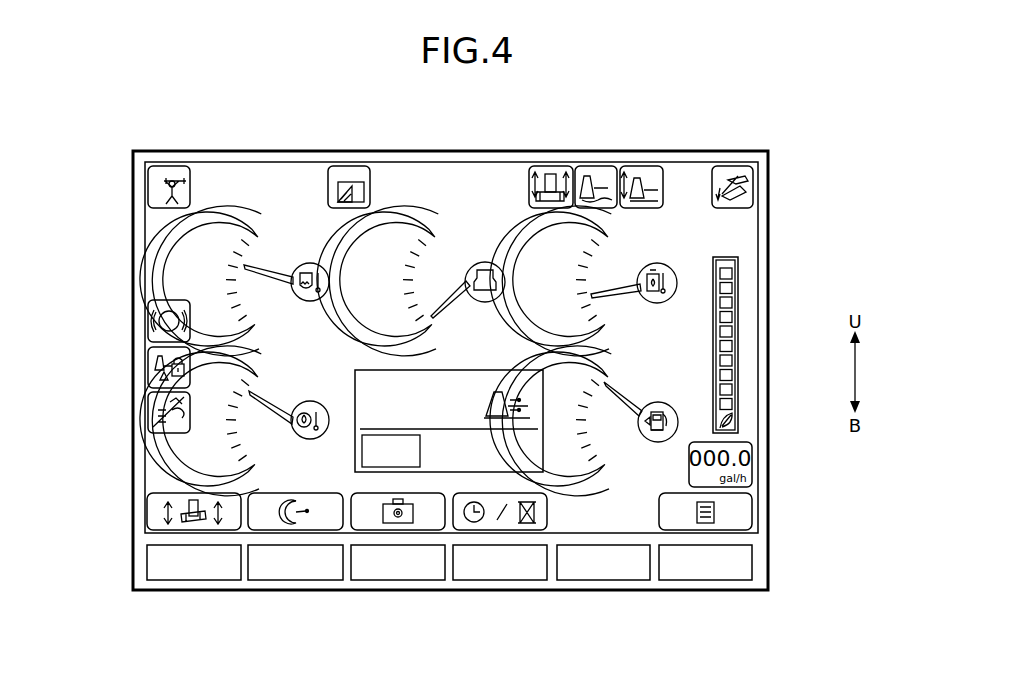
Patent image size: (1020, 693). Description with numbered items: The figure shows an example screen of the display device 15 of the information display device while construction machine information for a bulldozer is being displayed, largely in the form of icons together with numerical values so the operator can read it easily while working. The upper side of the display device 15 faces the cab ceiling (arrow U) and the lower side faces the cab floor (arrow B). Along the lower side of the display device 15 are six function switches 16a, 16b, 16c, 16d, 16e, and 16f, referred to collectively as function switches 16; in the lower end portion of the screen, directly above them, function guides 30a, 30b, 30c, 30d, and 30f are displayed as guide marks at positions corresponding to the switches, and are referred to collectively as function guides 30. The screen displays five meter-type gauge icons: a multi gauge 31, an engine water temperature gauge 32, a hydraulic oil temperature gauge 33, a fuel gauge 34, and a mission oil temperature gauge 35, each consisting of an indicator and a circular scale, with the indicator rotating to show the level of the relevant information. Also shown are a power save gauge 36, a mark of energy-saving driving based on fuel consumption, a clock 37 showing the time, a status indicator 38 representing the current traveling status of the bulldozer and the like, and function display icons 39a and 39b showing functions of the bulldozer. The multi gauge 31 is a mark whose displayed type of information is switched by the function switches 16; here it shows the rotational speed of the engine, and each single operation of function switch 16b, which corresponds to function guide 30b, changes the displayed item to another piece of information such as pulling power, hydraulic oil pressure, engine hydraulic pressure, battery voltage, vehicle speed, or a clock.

The display device 15 is at (697, 177).
The function switches 16 is at (730, 636).
The function switch 16a is at (195, 560).
The function switch 16b is at (297, 560).
The function switch 16c is at (400, 560).
The function switch 16d is at (502, 560).
The function switch 16e is at (604, 560).
The function switch 16f is at (706, 560).
The function guides 30 is at (452, 503).
The function guide 30a is at (152, 512).
The function guide 30b is at (255, 503).
The function guide 30c is at (365, 522).
The function guide 30d is at (543, 512).
The function guide 30f is at (745, 508).
The multi gauge 31 is at (508, 254).
The engine water temperature gauge 32 is at (292, 238).
The hydraulic oil temperature gauge 33 is at (677, 249).
The fuel gauge 34 is at (688, 392).
The mission oil temperature gauge 35 is at (323, 378).
The power save gauge 36 is at (738, 277).
The clock 37 is at (468, 158).
The status indicator 38 is at (392, 370).
The function display icon 39a is at (148, 172).
The function display icon 39b is at (551, 174).